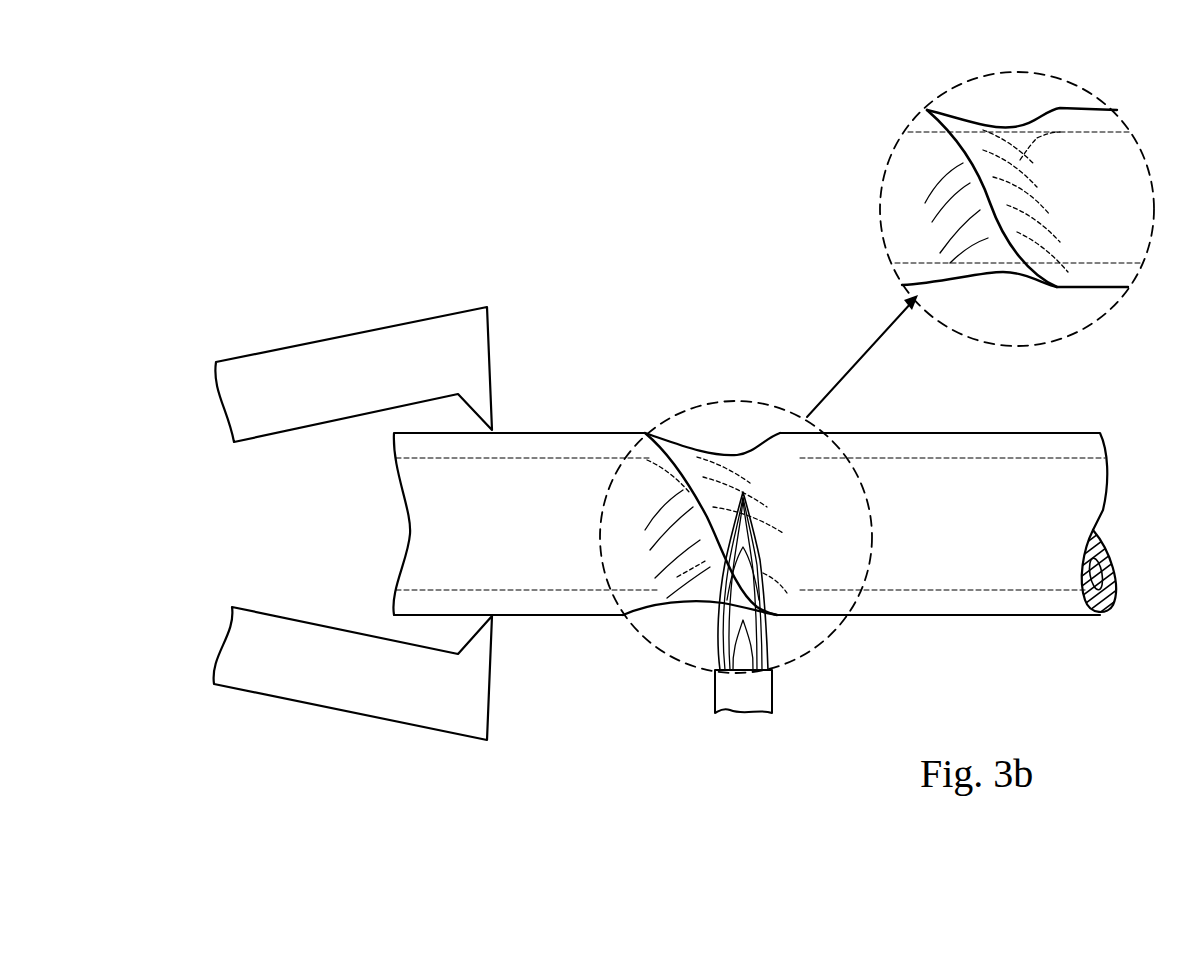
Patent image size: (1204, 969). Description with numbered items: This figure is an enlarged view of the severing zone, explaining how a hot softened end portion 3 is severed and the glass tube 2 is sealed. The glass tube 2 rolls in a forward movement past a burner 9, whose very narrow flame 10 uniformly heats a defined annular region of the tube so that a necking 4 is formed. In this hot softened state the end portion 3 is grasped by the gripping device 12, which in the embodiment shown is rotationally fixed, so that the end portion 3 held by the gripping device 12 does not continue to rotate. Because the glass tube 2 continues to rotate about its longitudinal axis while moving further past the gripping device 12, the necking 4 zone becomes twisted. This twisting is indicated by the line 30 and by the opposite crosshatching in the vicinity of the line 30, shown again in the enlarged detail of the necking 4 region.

The glass tube 2 is at (998, 445).
The end portion 3 is at (538, 448).
The necking 4 is at (737, 450).
The burner 9 is at (723, 693).
The flame 10 is at (760, 547).
The gripping device 12 is at (256, 371).
The twisting 30 is at (675, 458).